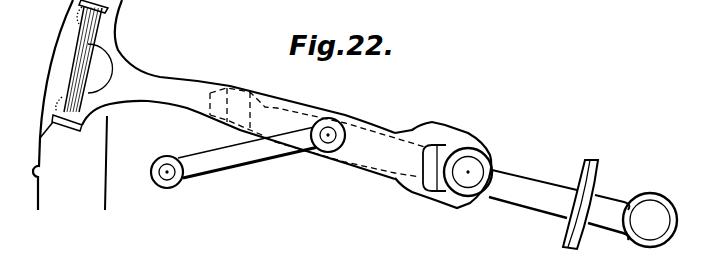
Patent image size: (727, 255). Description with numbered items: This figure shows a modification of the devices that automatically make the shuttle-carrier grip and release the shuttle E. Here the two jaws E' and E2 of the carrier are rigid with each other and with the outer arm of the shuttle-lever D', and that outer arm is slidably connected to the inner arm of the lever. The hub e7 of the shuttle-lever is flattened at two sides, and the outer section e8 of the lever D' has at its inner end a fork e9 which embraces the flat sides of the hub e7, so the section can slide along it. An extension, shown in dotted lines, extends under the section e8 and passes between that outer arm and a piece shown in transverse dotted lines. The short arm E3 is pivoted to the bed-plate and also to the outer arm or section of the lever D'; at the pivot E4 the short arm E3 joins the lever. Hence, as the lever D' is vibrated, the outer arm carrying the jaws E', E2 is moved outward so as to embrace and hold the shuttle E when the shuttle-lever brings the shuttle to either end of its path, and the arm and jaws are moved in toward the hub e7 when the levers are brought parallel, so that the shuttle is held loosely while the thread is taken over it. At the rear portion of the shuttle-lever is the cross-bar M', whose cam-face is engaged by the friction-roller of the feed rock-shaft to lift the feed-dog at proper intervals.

The shuttle E is at (80, 65).
The jaw E' is at (232, 89).
The jaw E2 is at (91, 120).
The short arm E3 is at (262, 160).
The pivot eye E4 is at (168, 161).
The outer section of the lever e8 is at (363, 124).
The fork e9 is at (472, 138).
The hub e7 is at (489, 163).
The shuttle-lever D' is at (559, 203).
The cross-bar M' is at (640, 201).